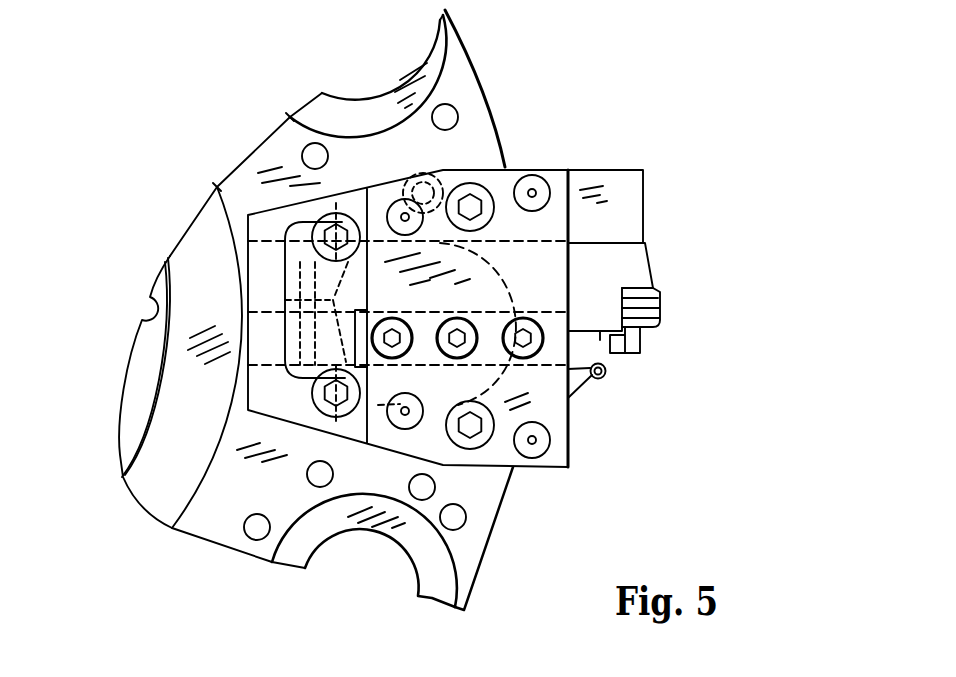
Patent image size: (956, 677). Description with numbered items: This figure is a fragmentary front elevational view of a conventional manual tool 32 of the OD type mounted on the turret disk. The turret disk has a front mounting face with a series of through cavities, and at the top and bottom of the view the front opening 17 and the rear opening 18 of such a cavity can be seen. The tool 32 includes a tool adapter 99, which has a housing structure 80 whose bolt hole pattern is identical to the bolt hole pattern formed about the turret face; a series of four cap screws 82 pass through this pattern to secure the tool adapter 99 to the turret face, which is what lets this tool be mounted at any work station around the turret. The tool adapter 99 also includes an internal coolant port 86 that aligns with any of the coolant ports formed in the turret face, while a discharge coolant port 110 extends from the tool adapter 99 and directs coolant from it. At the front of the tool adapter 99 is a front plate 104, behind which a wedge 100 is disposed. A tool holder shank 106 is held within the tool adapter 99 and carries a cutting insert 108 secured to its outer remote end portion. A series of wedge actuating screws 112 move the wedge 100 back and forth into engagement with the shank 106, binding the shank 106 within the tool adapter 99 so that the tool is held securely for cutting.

The front opening 17 is at (350, 528).
The rear opening 18 is at (407, 563).
The tool 32 is at (701, 108).
The housing structure 80 is at (568, 467).
The cap screws 82 is at (336, 237).
The internal coolant port 86 is at (423, 193).
The tool adapter 99 is at (583, 443).
The wedge 100 is at (570, 357).
The front plate 104 is at (520, 247).
The tool holder shank 106 is at (627, 265).
The cutting insert 108 is at (660, 312).
The discharge coolant port 110 is at (604, 377).
The wedge actuating screws 112 is at (392, 338).